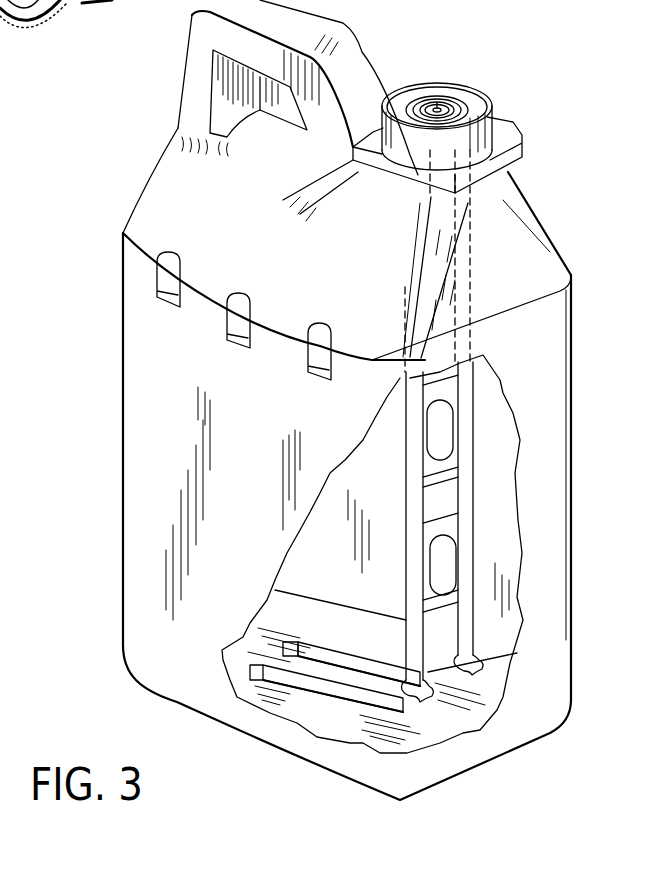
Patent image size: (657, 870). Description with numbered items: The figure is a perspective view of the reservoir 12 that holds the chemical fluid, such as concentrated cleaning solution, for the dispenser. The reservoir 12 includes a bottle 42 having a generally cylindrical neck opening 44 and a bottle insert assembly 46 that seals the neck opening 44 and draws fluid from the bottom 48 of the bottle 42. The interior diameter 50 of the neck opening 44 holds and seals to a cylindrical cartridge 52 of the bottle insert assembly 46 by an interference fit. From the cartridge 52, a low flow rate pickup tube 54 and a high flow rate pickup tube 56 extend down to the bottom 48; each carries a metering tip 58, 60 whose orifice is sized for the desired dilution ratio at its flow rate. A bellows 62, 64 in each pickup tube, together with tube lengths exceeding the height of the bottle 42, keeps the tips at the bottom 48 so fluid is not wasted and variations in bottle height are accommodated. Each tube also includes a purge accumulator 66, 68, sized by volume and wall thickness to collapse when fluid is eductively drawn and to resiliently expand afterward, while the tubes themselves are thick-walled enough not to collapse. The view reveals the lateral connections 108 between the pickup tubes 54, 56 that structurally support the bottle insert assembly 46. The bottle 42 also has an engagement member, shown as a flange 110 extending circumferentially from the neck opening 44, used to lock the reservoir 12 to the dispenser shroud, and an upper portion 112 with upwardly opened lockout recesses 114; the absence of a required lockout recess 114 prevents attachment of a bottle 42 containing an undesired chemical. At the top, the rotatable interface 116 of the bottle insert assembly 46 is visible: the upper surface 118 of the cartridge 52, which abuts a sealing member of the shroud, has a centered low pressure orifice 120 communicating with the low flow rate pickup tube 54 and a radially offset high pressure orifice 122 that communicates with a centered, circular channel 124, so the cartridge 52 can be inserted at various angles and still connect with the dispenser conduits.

The reservoir 12 is at (50, 543).
The bottle 42 is at (145, 472).
The neck opening 44 is at (412, 154).
The bottle insert assembly 46 is at (398, 540).
The bottom 48 is at (330, 636).
The interior diameter 50 is at (410, 93).
The cartridge 52 is at (413, 98).
The low flow rate pickup tube 54 is at (413, 486).
The high flow rate pickup tube 56 is at (472, 453).
The metering tip 58 is at (319, 670).
The metering tip 60 is at (289, 641).
The bellows 62 is at (420, 709).
The bellows 64 is at (471, 680).
The purge accumulator 66 is at (440, 424).
The purge accumulator 68 is at (450, 554).
The lateral connections 108 is at (490, 364).
The flange 110 is at (523, 140).
The upper portion 112 is at (530, 204).
The lockout recesses 114 is at (171, 299).
The rotatable interface 116 is at (494, 106).
The upper surface 118 is at (447, 98).
The low pressure orifice 120 is at (455, 105).
The high pressure orifice 122 is at (478, 108).
The channel 124 is at (430, 98).